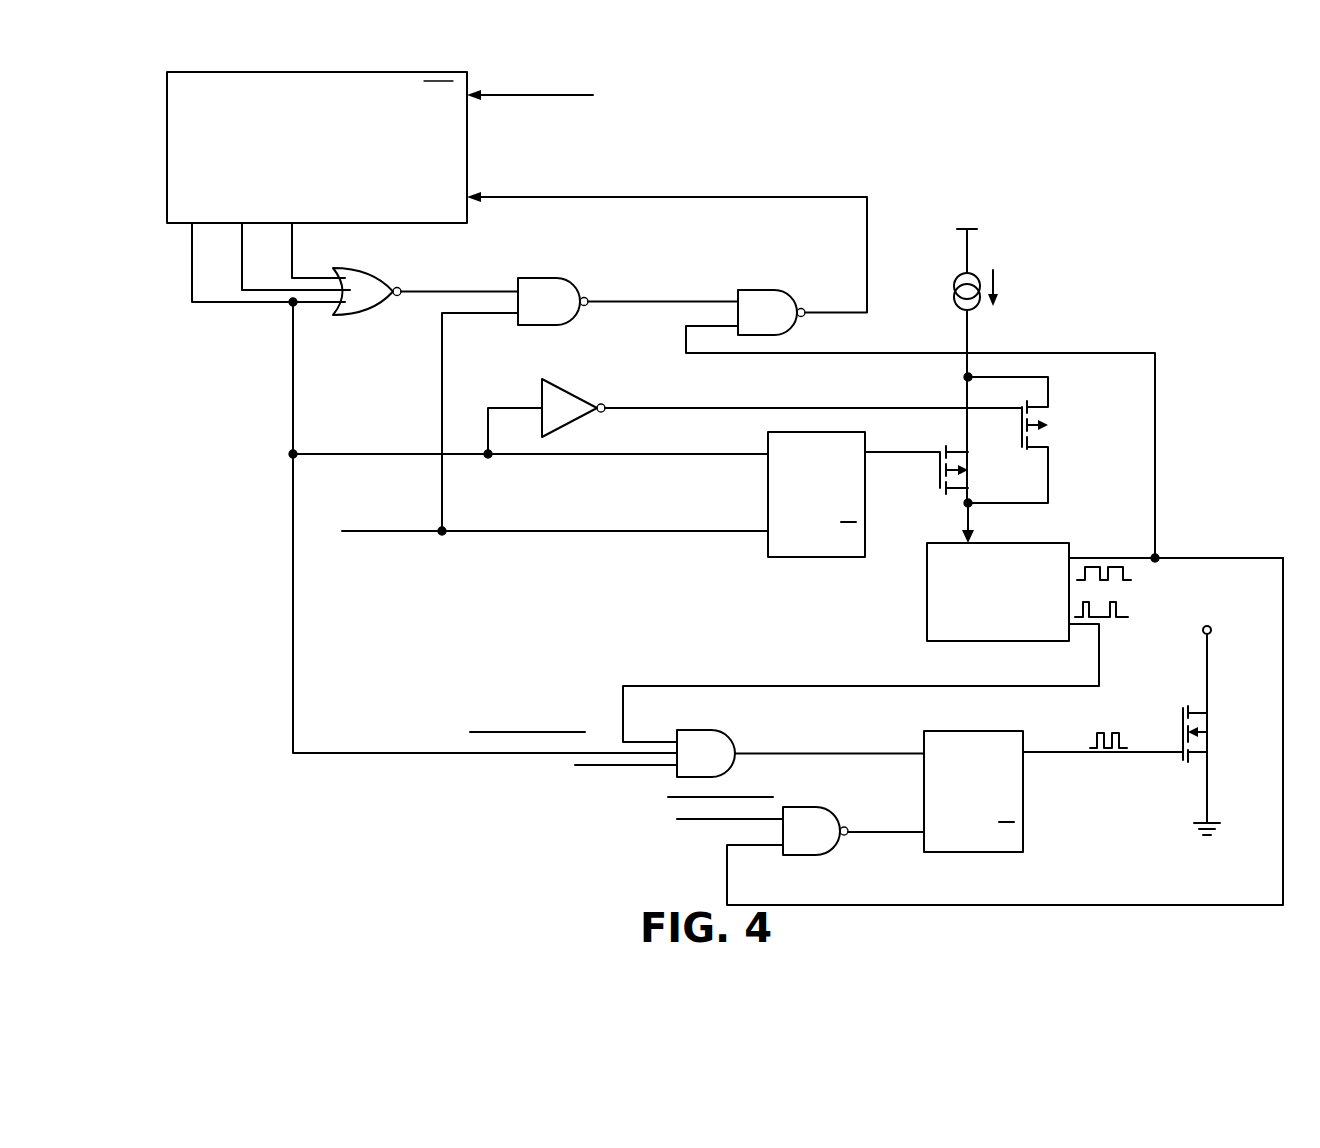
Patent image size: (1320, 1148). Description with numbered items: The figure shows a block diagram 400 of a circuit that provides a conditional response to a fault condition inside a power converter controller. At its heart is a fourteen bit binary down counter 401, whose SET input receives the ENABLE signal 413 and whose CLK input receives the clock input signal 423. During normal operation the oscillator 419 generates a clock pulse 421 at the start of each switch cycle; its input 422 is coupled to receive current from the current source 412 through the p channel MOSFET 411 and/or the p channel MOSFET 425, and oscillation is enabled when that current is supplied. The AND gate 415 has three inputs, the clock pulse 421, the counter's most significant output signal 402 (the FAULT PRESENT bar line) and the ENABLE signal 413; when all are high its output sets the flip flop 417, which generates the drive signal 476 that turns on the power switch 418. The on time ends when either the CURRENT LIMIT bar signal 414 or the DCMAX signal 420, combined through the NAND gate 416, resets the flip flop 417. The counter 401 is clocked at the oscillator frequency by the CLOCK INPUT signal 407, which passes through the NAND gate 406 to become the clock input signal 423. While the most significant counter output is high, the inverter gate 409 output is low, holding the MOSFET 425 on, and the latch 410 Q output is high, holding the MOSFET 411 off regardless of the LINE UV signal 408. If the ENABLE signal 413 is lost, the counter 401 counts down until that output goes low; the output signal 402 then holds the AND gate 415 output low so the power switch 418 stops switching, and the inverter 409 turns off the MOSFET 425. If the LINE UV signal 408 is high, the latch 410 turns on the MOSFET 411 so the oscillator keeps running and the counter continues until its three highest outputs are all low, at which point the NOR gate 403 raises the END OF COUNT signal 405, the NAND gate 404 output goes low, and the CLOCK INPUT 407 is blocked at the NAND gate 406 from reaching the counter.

The block diagram 400 is at (1080, 93).
The counter 401 is at (158, 126).
The Q14 output signal 402 is at (188, 298).
The NOR gate 403 is at (372, 268).
The NAND gate 404 is at (573, 280).
The END OF COUNT signal 405 is at (470, 266).
The NAND gate 406 is at (768, 285).
The CLOCK INPUT signal 407 is at (760, 362).
The LINE UV signal 408 is at (386, 558).
The inverter gate 409 is at (578, 390).
The latch 410 is at (817, 576).
The MOSFET 411 is at (978, 470).
The current source 412 is at (985, 270).
The ENABLE signal 413 is at (600, 92).
The CURRENT LIMIT bar signal 414 is at (693, 826).
The AND gate 415 is at (740, 738).
The NAND gate 416 is at (840, 848).
The flip flop 417 is at (1028, 780).
The power switch 418 is at (1206, 745).
The oscillator 419 is at (921, 629).
The DCMAX signal 420 is at (1073, 898).
The clock pulse 421 is at (648, 682).
The input 422 is at (999, 530).
The clock input signal 423 is at (645, 192).
The MOSFET 425 is at (1057, 418).
The drive signal 476 is at (1100, 735).